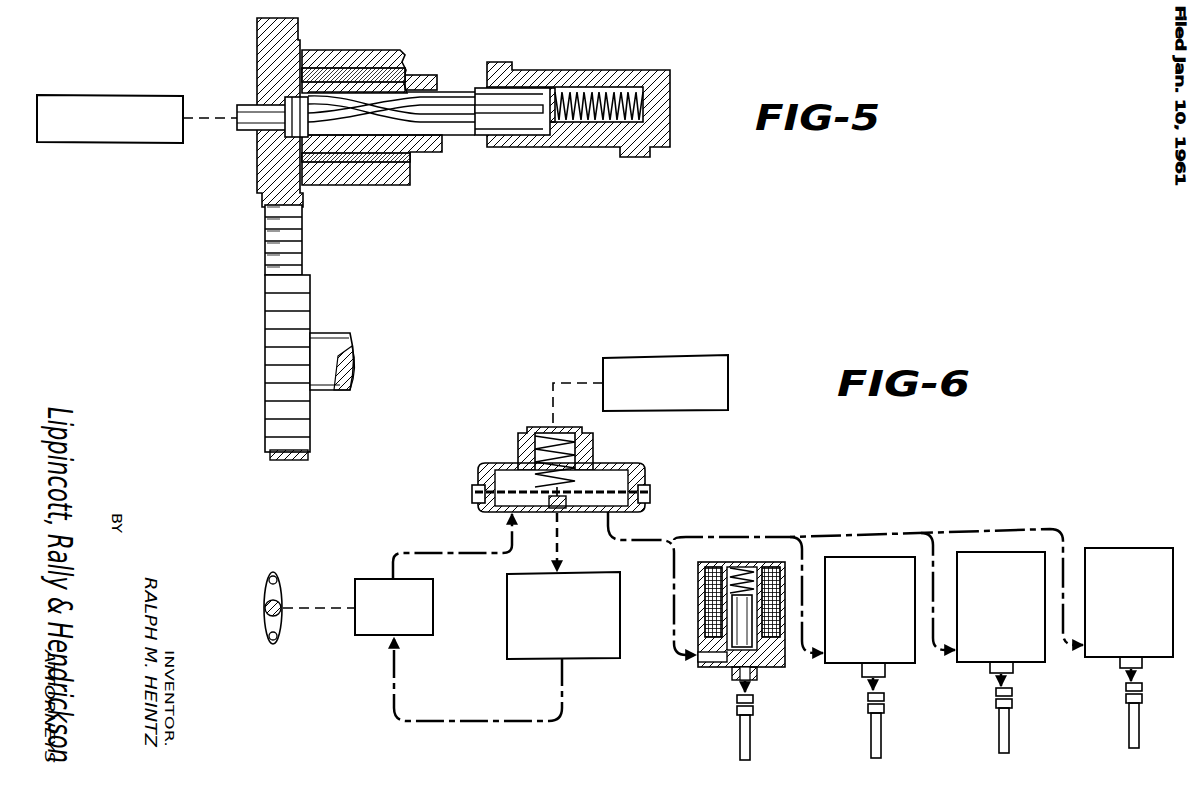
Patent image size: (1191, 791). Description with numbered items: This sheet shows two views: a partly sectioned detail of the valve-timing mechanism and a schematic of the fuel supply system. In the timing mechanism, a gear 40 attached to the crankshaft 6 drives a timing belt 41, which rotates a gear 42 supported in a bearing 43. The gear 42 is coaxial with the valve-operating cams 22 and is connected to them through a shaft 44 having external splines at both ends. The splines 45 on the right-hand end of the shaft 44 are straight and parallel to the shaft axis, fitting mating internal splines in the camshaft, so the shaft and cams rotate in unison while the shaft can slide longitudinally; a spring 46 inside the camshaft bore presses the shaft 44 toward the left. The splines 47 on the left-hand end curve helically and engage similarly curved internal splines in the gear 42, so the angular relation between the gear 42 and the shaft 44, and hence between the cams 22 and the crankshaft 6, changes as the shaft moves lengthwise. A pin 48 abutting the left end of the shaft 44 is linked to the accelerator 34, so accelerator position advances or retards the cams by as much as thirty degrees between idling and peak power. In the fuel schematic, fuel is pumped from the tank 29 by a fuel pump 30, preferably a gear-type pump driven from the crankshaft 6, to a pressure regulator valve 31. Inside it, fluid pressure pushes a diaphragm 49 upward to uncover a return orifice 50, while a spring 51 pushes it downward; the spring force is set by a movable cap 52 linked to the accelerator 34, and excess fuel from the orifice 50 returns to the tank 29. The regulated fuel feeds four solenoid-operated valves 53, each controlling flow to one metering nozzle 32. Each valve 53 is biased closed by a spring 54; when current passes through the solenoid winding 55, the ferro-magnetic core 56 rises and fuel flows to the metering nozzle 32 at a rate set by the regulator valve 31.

In FIG. 5, the crankshaft 6 is at (335, 334).
In FIG. 6, the crankshaft 6 is at (265, 608).
In FIG. 5, the valve-operating cams 22 is at (508, 62).
In FIG. 6, the tank 29 is at (507, 634).
In FIG. 6, the fuel pump 30 is at (370, 638).
In FIG. 6, the pressure regulator valve 31 is at (561, 465).
In FIG. 6, the metering nozzle 32 is at (740, 731).
In FIG. 5, the accelerator 34 is at (102, 76).
In FIG. 6, the accelerator 34 is at (603, 358).
In FIG. 5, the gear 40 is at (265, 323).
In FIG. 5, the timing belt 41 is at (300, 240).
In FIG. 5, the gear 42 is at (257, 79).
In FIG. 5, the bearing 43 is at (374, 62).
In FIG. 5, the shaft 44 is at (463, 135).
In FIG. 5, the splines 45 is at (476, 88).
In FIG. 5, the spring 46 is at (600, 95).
In FIG. 5, the splines 47 is at (415, 105).
In FIG. 5, the pin 48 is at (251, 130).
In FIG. 6, the diaphragm 49 is at (493, 466).
In FIG. 6, the return orifice 50 is at (552, 508).
In FIG. 6, the spring 51 is at (536, 448).
In FIG. 6, the movable cap 52 is at (541, 427).
In FIG. 6, the solenoid-operated valve 53 is at (941, 618).
In FIG. 6, the spring 54 is at (741, 568).
In FIG. 6, the solenoid winding 55 is at (787, 548).
In FIG. 6, the ferro-magnetic core 56 is at (734, 648).